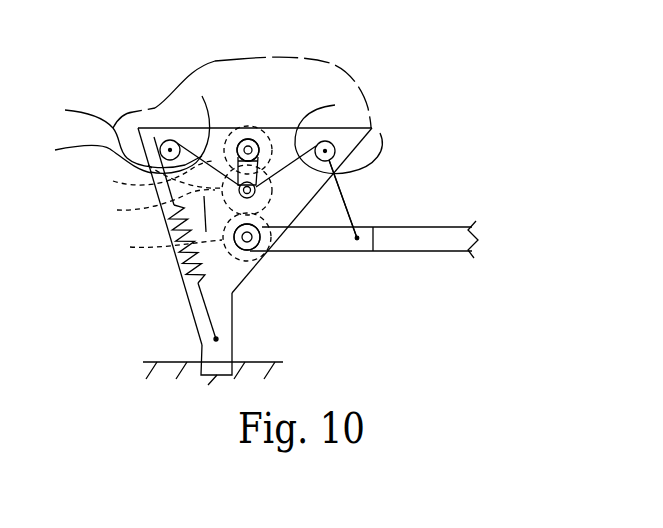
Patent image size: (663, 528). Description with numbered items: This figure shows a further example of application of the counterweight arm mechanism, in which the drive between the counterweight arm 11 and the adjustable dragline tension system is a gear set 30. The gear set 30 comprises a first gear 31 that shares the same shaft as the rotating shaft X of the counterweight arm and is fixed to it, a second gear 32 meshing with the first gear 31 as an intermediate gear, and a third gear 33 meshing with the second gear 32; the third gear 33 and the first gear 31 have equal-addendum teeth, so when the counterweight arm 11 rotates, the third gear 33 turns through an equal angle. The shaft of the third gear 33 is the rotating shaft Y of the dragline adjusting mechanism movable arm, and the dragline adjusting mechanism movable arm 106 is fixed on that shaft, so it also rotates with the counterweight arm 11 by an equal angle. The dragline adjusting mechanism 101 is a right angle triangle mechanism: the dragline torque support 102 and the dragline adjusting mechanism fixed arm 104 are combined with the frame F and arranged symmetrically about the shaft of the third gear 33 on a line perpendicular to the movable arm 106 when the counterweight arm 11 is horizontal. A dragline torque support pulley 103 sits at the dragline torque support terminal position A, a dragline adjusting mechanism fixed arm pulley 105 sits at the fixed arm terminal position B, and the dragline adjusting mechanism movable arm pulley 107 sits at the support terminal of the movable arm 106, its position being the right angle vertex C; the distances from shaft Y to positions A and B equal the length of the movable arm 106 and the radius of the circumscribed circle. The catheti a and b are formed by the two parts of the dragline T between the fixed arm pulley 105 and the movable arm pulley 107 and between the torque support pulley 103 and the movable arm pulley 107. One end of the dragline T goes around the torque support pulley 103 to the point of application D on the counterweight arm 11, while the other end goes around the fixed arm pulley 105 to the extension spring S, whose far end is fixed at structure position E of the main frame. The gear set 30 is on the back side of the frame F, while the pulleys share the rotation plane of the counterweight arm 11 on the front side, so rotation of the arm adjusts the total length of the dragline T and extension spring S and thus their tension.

The dragline adjusting mechanism 101 is at (167, 93).
The dragline torque support 102 is at (345, 183).
The dragline torque support pulley 103 is at (380, 143).
The dragline adjusting mechanism fixed arm 104 is at (83, 158).
The dragline adjusting mechanism fixed arm pulley 105 is at (115, 134).
The dragline adjusting mechanism movable arm 106 is at (280, 162).
The dragline adjusting mechanism movable arm pulley 107 is at (264, 200).
The counterweight arm 11 is at (449, 218).
The gear set 30 is at (135, 211).
The first gear 31 is at (161, 247).
The second gear 32 is at (154, 206).
The third gear 33 is at (155, 176).
The dragline torque support terminal position A is at (334, 146).
The dragline adjusting mechanism fixed arm terminal position B is at (163, 144).
The right angle vertex C is at (301, 205).
The point of application D is at (359, 254).
The structure position E is at (212, 338).
The frame F is at (221, 223).
The extension spring S is at (184, 267).
The dragline T is at (353, 198).
The rotating shaft of the counterweight arm X is at (250, 251).
The rotating shaft of the dragline adjusting mechanism movable arm Y is at (248, 133).
The cathetus a is at (180, 126).
The cathetus b is at (341, 104).